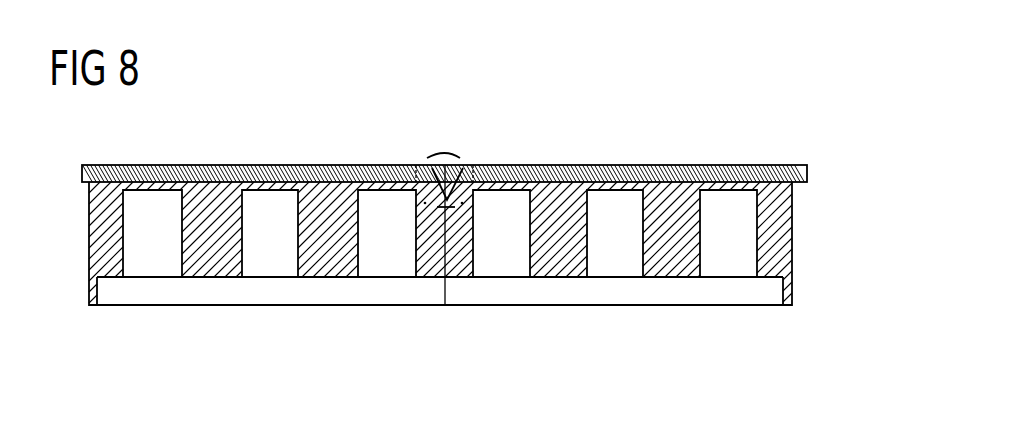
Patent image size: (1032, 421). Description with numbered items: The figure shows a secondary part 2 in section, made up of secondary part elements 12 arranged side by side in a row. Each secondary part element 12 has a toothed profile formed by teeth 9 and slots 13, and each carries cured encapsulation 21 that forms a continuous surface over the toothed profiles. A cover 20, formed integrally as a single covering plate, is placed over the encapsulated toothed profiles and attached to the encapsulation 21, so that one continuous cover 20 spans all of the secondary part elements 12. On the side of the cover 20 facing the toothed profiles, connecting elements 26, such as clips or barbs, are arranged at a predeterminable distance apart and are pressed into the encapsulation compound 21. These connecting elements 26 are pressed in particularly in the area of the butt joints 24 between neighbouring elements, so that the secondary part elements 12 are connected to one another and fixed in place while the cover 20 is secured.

The secondary part 2 is at (822, 102).
The teeth 9 is at (499, 262).
The secondary part element 12 is at (110, 305).
The slots 13 is at (680, 258).
The cover 20 is at (610, 165).
The encapsulation 21 is at (675, 208).
The butt joint 24 is at (444, 322).
The connecting element 26 is at (446, 150).